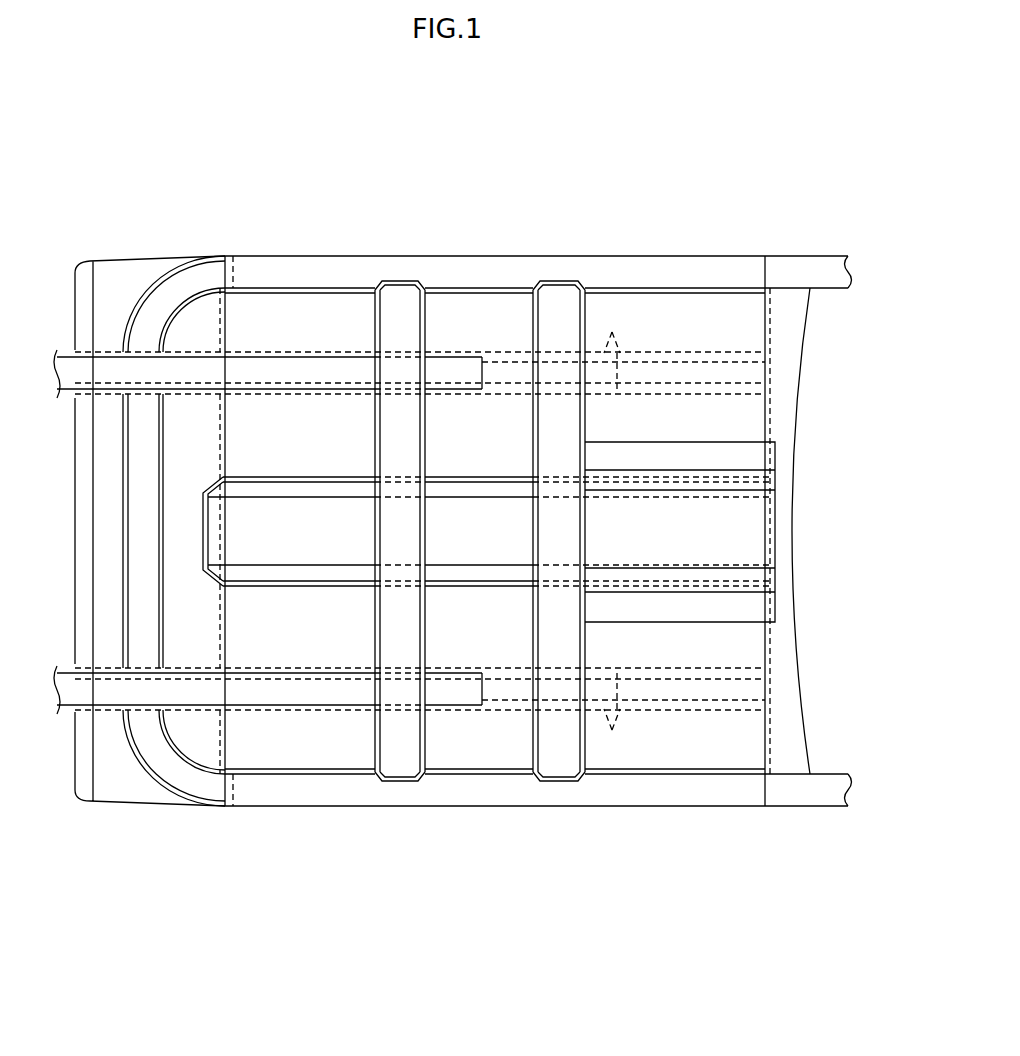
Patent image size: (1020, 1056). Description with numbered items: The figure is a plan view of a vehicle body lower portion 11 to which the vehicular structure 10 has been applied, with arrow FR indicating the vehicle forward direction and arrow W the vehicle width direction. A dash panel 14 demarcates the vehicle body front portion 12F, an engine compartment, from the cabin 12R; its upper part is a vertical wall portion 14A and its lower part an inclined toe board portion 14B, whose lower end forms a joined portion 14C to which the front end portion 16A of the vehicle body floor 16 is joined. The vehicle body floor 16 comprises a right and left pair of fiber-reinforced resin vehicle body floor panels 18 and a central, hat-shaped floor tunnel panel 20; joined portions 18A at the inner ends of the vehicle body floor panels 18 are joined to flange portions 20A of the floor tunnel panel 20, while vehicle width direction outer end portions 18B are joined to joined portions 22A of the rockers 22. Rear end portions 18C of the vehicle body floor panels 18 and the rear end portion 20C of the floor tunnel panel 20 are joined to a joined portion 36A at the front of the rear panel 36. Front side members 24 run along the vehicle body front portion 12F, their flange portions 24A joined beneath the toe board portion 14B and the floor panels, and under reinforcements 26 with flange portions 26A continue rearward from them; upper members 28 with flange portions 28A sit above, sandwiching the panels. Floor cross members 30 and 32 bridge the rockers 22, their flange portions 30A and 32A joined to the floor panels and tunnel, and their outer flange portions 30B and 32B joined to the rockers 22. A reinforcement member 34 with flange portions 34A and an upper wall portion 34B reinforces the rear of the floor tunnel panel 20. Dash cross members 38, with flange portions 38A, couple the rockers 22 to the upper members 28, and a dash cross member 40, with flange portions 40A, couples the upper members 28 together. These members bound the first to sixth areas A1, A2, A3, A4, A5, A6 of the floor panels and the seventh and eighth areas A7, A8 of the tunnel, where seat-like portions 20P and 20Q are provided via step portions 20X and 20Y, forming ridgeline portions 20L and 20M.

The vehicular structure 10 is at (576, 117).
The vehicle body lower portion 11 is at (608, 147).
The vehicle body front portion 12F is at (51, 296).
The cabin 12R is at (338, 301).
The dash panel 14 is at (100, 276).
The vertical wall portion 14A is at (83, 420).
The toe board portion 14B is at (228, 450).
The joined portion 14C is at (226, 330).
The vehicle body floor 16 is at (291, 316).
The front end portion 16A is at (233, 270).
The vehicle body floor panel 18 is at (495, 306).
The joined portion 18A is at (357, 473).
The vehicle width direction outer end portion 18B is at (440, 295).
The rear end portion 18C is at (772, 338).
The floor tunnel panel 20 is at (243, 550).
The flange portion 20A is at (344, 477).
The rear end portion 20C is at (775, 478).
The ridgeline portion 20L is at (267, 541).
The ridgeline portion 20M is at (440, 580).
The seat-like portion 20P is at (208, 553).
The seat-like portion 20Q is at (572, 534).
The step portion 20X is at (290, 480).
The step portion 20Y is at (522, 492).
The rocker 22 is at (453, 260).
The joined portion 22A is at (441, 292).
The front side member 24 is at (69, 345).
The flange portion 24A is at (240, 356).
The under reinforcement 26 is at (641, 341).
The flange portion 26A is at (612, 336).
The upper member 28 is at (197, 368).
The flange portion 28A is at (275, 367).
The floor cross member 30 is at (414, 426).
The flange portion 30A is at (428, 443).
The flange portion 30B is at (400, 280).
The floor cross member 32 is at (577, 426).
The flange portion 32A is at (586, 432).
The flange portion 32B is at (561, 280).
The reinforcement member 34 is at (754, 515).
The flange portion 34A is at (748, 452).
The upper wall portion 34B is at (748, 544).
The rear panel 36 is at (792, 386).
The joined portion 36A is at (771, 308).
The dash cross member 38 is at (180, 274).
The flange portion 38A is at (177, 299).
The dash cross member 40 is at (137, 542).
The flange portion 40A is at (160, 517).
The first area A1 is at (316, 316).
The second area A2 is at (316, 595).
The third area A3 is at (511, 320).
The fourth area A4 is at (492, 461).
The fifth area A5 is at (703, 323).
The sixth area A6 is at (712, 421).
The seventh area A7 is at (248, 525).
The eighth area A8 is at (503, 546).
The vehicle forward direction FR is at (681, 137).
The vehicle width direction W is at (813, 684).